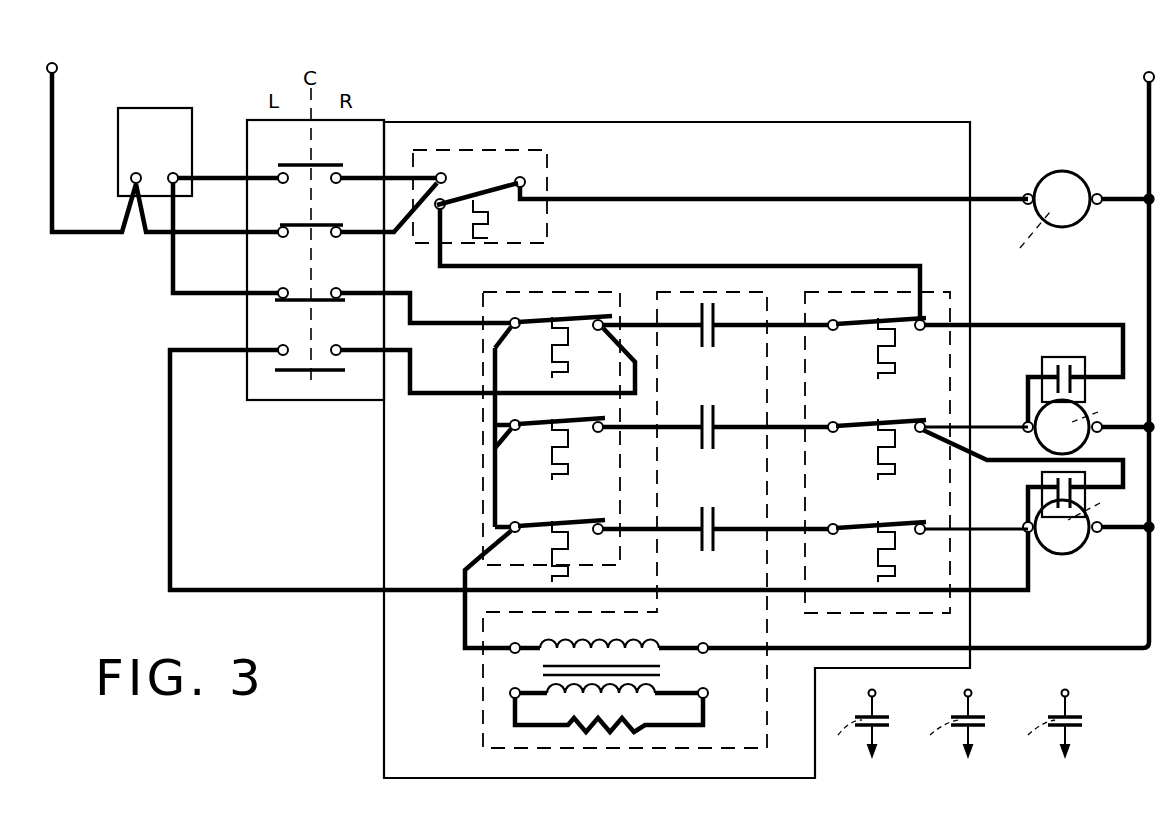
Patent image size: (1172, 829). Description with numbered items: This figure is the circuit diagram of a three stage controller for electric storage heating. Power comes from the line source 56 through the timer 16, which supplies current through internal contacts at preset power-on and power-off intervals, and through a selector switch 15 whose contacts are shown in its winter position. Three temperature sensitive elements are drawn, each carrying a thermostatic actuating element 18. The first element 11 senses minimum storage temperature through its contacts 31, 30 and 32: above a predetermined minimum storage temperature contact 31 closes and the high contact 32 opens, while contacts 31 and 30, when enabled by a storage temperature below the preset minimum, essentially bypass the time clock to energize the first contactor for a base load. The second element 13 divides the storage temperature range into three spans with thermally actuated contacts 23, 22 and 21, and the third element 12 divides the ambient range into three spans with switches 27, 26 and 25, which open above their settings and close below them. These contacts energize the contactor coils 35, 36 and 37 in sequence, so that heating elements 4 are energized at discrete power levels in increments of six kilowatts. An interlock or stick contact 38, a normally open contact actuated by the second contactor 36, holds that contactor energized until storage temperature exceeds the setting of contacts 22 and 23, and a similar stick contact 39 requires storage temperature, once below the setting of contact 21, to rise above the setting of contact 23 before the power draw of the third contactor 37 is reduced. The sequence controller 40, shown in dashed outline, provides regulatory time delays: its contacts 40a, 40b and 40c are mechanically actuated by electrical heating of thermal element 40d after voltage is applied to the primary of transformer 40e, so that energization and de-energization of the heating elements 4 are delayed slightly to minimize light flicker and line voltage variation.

The line source 56 is at (53, 63).
The timer 16 is at (145, 118).
The selector switch 15 is at (212, 318).
The temperature sensitive element 11 is at (714, 196).
The contact 31 is at (441, 172).
The switch element 30 is at (493, 172).
The high contact 32 is at (437, 212).
The temperature sensitive element 13 is at (550, 470).
The thermostatic actuating element 18 is at (538, 346).
The thermally actuated contact 23 is at (600, 331).
The thermally actuated contact 22 is at (598, 433).
The thermally actuated contact 21 is at (600, 535).
The sequence controller 40 is at (619, 519).
The contact 40a is at (715, 348).
The contact 40b is at (715, 450).
The contact 40c is at (715, 552).
The thermal element 40d is at (600, 735).
The transformer 40e is at (527, 673).
The temperature sensitive element 12 is at (964, 416).
The switch 27 is at (915, 330).
The switch 26 is at (915, 432).
The switch 25 is at (915, 534).
The contactor coil 35 is at (1058, 163).
The interlock contact 38 is at (1040, 368).
The contactor coil 36 is at (1098, 446).
The interlock contact 39 is at (1040, 482).
The contactor coil 37 is at (1082, 560).
The heating element 4 is at (973, 729).